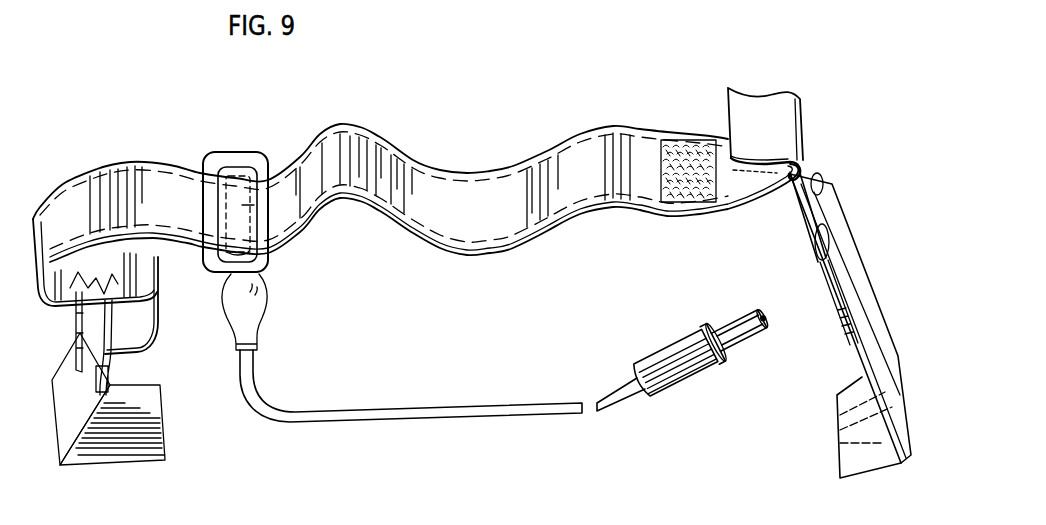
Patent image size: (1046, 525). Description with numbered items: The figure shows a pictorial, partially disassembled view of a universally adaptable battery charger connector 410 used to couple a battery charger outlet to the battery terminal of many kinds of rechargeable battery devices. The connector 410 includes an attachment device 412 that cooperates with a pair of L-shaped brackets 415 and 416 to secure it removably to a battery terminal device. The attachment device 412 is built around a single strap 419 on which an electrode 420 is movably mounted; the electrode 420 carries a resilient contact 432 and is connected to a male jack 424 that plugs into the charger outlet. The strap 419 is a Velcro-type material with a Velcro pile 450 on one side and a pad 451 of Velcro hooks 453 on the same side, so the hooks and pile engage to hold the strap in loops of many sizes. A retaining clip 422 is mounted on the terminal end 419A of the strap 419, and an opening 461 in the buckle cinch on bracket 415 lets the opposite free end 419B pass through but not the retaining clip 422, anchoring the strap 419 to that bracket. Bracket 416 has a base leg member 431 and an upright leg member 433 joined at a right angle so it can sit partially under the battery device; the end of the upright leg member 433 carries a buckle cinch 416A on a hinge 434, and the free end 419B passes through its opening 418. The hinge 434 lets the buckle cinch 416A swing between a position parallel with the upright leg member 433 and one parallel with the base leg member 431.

The universally adaptable battery charger connector 410 is at (783, 91).
The attachment device 412 is at (128, 160).
The L-shaped bracket 415 is at (152, 437).
The L-shaped bracket 416 is at (809, 305).
The buckle cinch 416A is at (815, 172).
The opening 418 is at (792, 214).
The strap 419 is at (514, 190).
The terminal end 419A is at (143, 350).
The free end 419B is at (746, 103).
The electrode 420 is at (238, 152).
The retaining clip 422 is at (94, 374).
The male jack 424 is at (693, 382).
The base leg member 431 is at (853, 418).
The contact 432 is at (282, 150).
The upright leg member 433 is at (843, 257).
The hinge 434 is at (814, 200).
The Velcro pile 450 is at (733, 172).
The pad 451 is at (652, 145).
The Velcro hooks 453 is at (681, 143).
The opening 461 is at (52, 382).